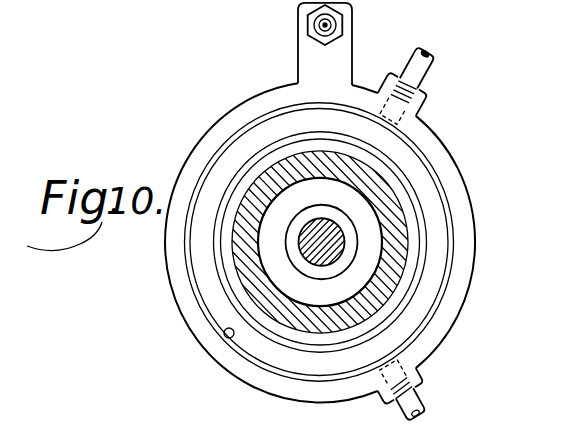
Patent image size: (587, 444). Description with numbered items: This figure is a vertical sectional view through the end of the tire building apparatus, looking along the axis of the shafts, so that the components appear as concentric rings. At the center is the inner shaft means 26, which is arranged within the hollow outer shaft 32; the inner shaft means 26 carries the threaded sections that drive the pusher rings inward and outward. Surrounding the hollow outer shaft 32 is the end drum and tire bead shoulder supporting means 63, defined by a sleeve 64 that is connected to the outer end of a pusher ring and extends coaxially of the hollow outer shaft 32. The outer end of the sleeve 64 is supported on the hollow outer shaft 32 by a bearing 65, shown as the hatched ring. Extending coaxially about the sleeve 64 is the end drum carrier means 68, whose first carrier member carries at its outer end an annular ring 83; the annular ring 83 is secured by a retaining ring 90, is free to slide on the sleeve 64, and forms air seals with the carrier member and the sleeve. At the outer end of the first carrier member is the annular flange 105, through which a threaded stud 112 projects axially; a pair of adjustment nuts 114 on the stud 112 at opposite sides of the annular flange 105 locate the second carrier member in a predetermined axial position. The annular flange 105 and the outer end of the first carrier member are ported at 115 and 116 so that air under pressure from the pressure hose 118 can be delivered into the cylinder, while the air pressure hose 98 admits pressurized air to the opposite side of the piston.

The inner shaft means 26 is at (313, 258).
The hollow outer shaft 32 is at (262, 190).
The end drum and tire bead shoulder supporting means 63 is at (413, 192).
The sleeve 64 is at (419, 235).
The bearing 65 is at (410, 262).
The end drum carrier means 68 is at (182, 324).
The annular ring 83 is at (203, 260).
The retaining ring 90 is at (231, 337).
The air pressure hose 98 is at (422, 395).
The annular flange 105 is at (300, 50).
The threaded stud 112 is at (341, 24).
The adjustment nuts 114 is at (325, 25).
The port 115 is at (426, 105).
The port 116 is at (403, 118).
The pressure hose 118 is at (428, 76).